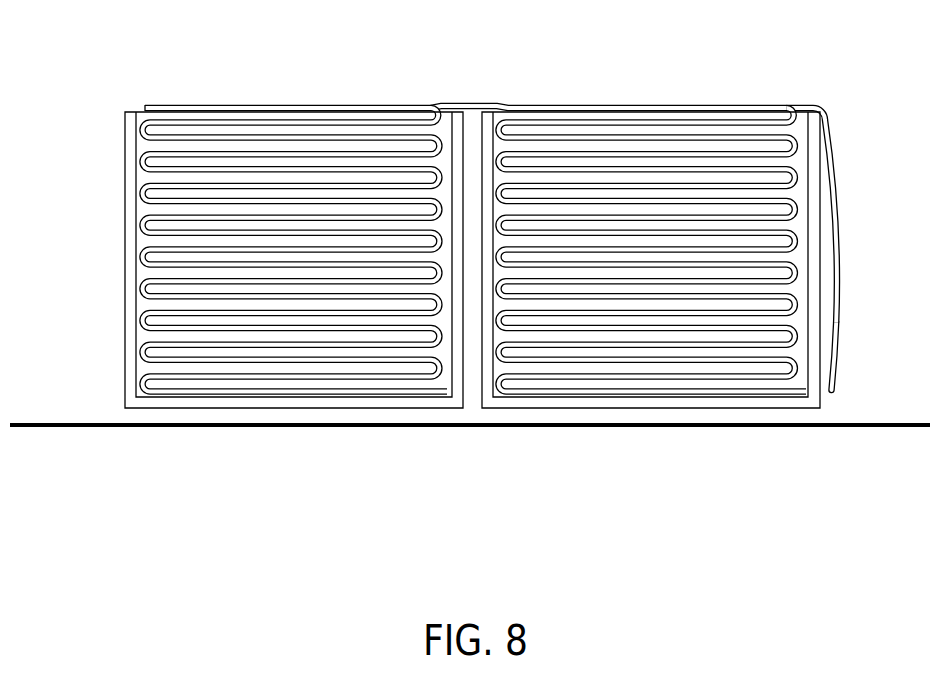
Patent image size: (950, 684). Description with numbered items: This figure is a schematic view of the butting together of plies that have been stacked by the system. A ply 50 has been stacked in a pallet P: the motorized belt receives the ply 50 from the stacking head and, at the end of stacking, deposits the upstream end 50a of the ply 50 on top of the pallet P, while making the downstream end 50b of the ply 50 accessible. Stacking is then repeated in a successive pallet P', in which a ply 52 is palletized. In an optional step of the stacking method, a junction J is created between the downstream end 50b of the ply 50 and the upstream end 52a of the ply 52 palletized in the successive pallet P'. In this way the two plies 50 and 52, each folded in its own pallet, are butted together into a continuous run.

The ply 50 is at (773, 104).
The upstream end of the ply 50a is at (837, 388).
The downstream end of the ply 50b is at (488, 104).
The ply 52 is at (137, 158).
The upstream end of the ply 52a is at (458, 104).
The junction J is at (474, 104).
The pallet P is at (687, 260).
The successive pallet P' is at (256, 260).